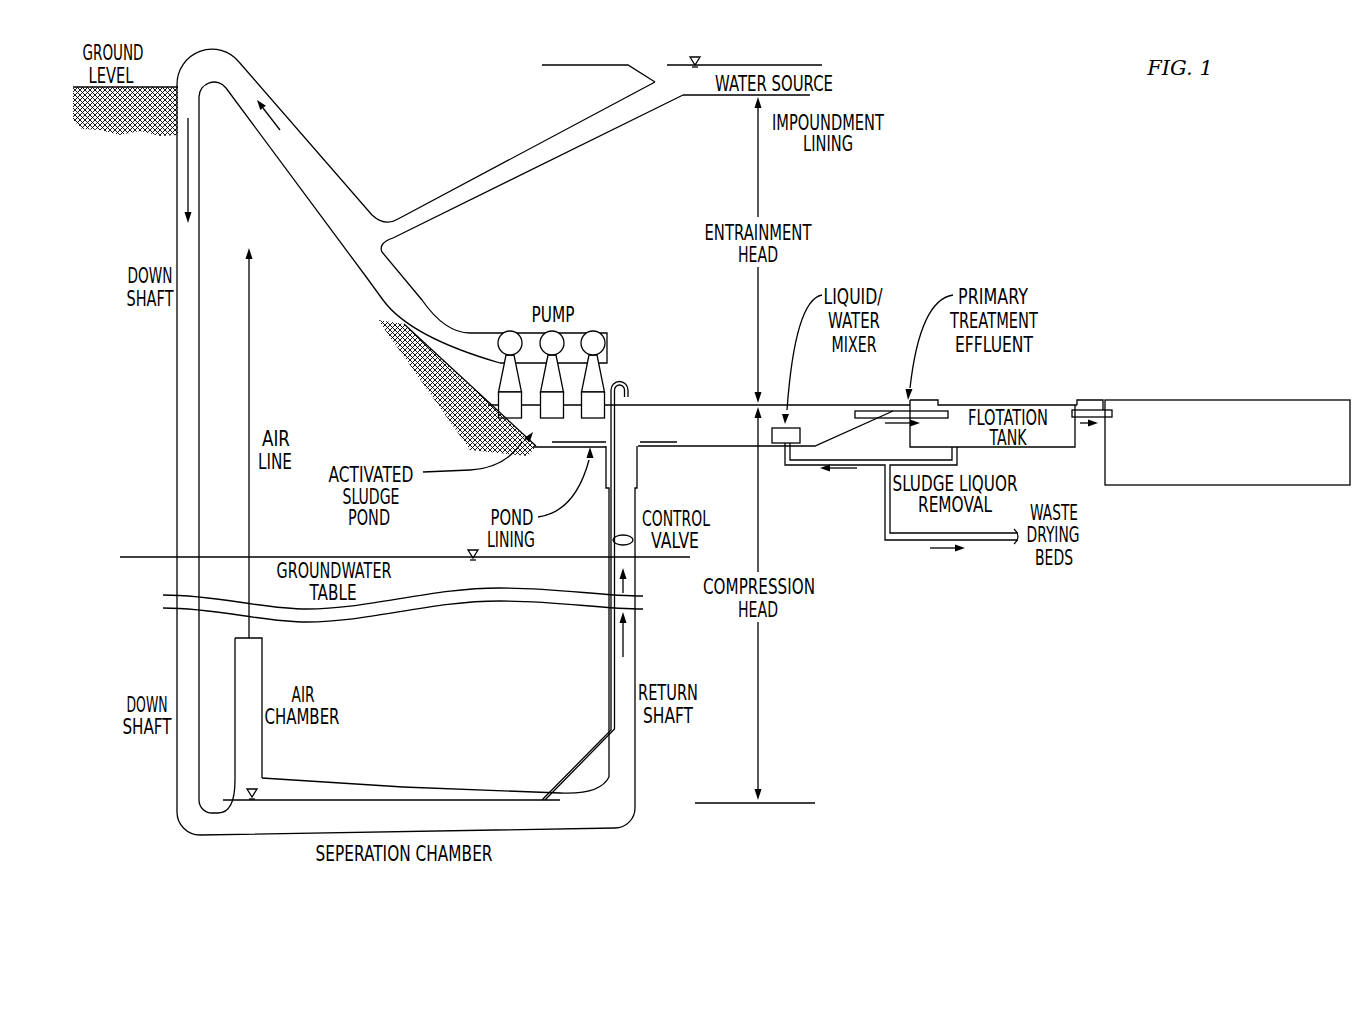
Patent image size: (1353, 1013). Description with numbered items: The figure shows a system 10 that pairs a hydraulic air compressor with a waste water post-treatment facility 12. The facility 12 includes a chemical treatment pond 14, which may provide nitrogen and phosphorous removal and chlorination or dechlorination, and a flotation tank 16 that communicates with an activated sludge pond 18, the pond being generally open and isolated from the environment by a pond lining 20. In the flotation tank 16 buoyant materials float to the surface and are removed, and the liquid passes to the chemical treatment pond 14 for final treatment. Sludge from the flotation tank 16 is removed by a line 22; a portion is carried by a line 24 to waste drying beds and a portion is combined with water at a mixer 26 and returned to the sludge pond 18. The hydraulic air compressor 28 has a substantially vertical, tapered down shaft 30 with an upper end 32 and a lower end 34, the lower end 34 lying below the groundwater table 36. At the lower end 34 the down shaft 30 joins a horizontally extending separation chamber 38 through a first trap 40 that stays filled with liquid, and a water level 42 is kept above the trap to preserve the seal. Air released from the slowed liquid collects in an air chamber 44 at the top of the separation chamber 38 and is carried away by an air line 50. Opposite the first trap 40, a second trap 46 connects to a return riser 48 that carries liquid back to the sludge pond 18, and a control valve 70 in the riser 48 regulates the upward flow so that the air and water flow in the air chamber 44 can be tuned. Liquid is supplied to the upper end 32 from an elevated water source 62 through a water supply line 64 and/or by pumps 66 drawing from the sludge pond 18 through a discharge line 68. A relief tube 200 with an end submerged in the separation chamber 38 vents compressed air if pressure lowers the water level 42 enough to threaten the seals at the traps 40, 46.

The system 10 is at (945, 240).
The waste water post-treatment facility 12 is at (1070, 263).
The chemical treatment pond 14 is at (1228, 400).
The flotation tank 16 is at (988, 406).
The activated sludge pond 18 is at (630, 410).
The pond lining 20 is at (560, 444).
The line 22 is at (1090, 410).
The line 24 is at (886, 517).
The mixer 26 is at (776, 443).
The hydraulic air compressor 28 is at (373, 105).
The down shaft 30 is at (188, 532).
The upper end 32 is at (227, 60).
The lower end 34 is at (177, 805).
The groundwater table 36 is at (447, 557).
The separation chamber 38 is at (267, 836).
The first trap 40 is at (188, 825).
The water level 42 is at (283, 800).
The air chamber 44 is at (403, 787).
The second trap 46 is at (612, 817).
The return riser 48 is at (635, 637).
The air line 50 is at (262, 662).
The water source 62 is at (865, 65).
The water supply line 64 is at (532, 175).
The pumps 66 is at (512, 331).
The discharge line 68 is at (315, 149).
The control valve 70 is at (613, 533).
The relief tube 200 is at (613, 458).